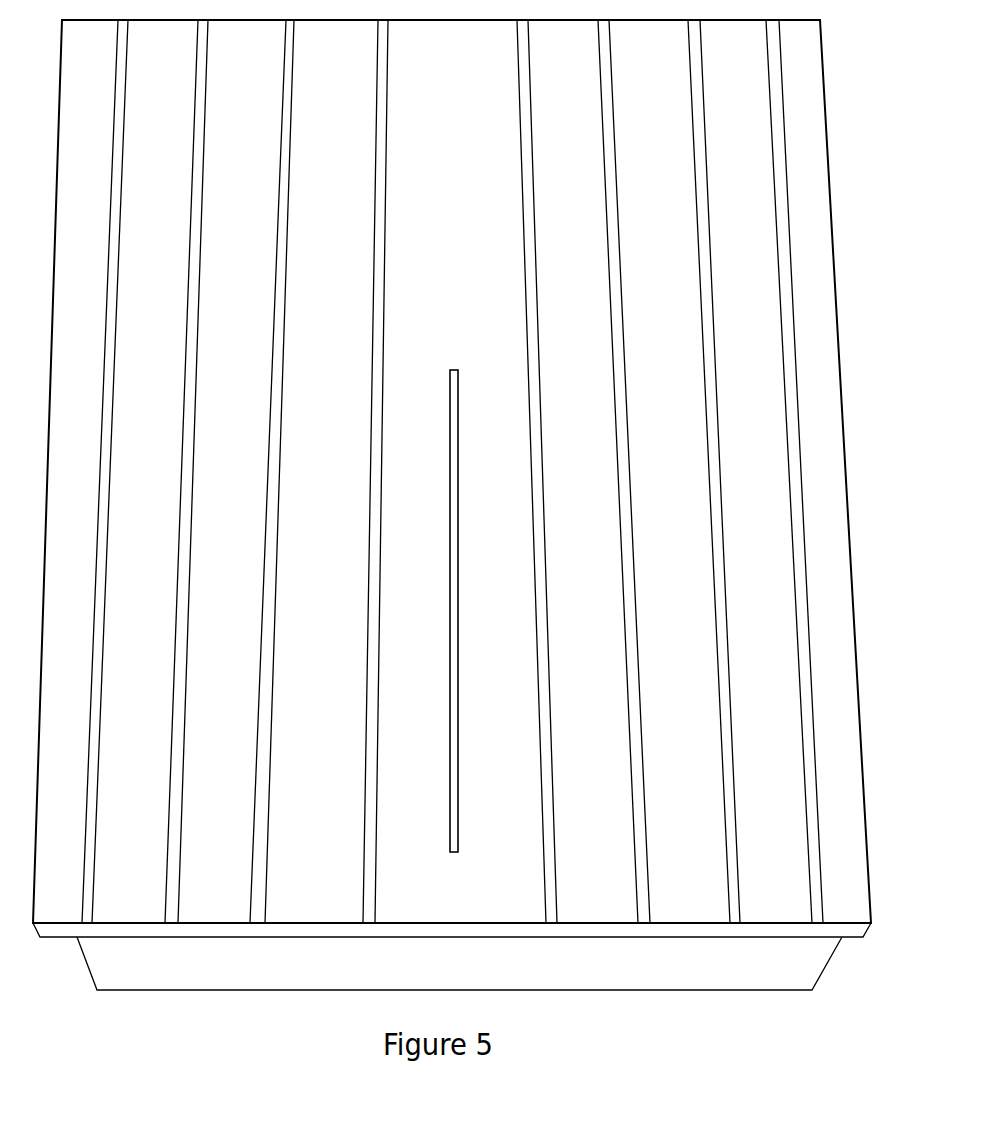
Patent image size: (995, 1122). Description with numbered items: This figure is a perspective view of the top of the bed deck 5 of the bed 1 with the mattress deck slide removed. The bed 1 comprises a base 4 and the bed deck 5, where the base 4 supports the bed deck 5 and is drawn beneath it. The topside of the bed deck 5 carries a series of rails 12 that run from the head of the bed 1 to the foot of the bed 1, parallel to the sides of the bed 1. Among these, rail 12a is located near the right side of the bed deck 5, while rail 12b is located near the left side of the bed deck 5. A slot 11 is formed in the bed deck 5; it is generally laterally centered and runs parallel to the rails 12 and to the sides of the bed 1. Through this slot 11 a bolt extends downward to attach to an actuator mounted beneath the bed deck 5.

The bed 1 is at (471, 522).
The base 4 is at (176, 976).
The bed deck 5 is at (750, 385).
The slot 11 is at (458, 437).
The rails 12 is at (738, 877).
The rail 12a is at (817, 882).
The rail 12b is at (92, 900).